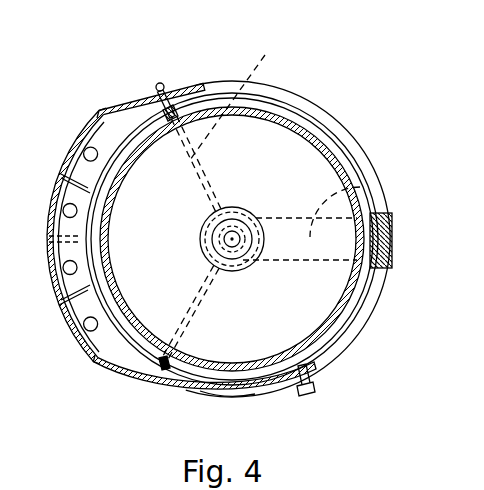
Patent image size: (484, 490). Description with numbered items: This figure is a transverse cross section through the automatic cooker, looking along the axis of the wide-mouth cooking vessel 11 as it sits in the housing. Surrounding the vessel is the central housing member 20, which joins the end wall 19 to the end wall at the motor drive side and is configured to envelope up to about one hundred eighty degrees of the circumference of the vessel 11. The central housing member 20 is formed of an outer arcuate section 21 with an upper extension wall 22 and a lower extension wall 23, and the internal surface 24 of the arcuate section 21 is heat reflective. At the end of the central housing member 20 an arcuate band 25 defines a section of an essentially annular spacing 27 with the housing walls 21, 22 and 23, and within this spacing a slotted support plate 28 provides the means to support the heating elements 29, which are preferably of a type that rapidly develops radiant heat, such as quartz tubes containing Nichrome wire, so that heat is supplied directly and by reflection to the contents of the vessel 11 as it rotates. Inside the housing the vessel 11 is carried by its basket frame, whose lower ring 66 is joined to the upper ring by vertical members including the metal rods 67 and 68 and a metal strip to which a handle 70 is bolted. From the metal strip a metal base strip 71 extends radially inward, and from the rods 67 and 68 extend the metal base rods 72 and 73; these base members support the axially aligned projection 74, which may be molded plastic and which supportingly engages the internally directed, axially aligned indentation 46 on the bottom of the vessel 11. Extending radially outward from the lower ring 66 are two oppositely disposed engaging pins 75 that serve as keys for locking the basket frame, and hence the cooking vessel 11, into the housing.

The cooking vessel 11 is at (280, 100).
The end wall 19 is at (319, 107).
The central housing member 20 is at (102, 103).
The outer arcuate section 21 is at (73, 139).
The upper extension wall 22 is at (128, 103).
The lower extension wall 23 is at (116, 376).
The internal surface 24 is at (96, 118).
The arcuate band 25 is at (173, 95).
The annular spacing 27 is at (100, 364).
The slotted support plate 28 is at (111, 128).
The heating elements 29 is at (88, 324).
The indentation 46 is at (246, 212).
The lower ring 66 is at (290, 109).
The metal rod 67 is at (166, 372).
The metal rod 68 is at (170, 110).
The handle 70 is at (395, 230).
The metal base strip 71 is at (362, 186).
The metal base rod 72 is at (229, 397).
The metal base rod 73 is at (239, 92).
The axially aligned projection 74 is at (235, 212).
The engaging pins 75 is at (312, 388).